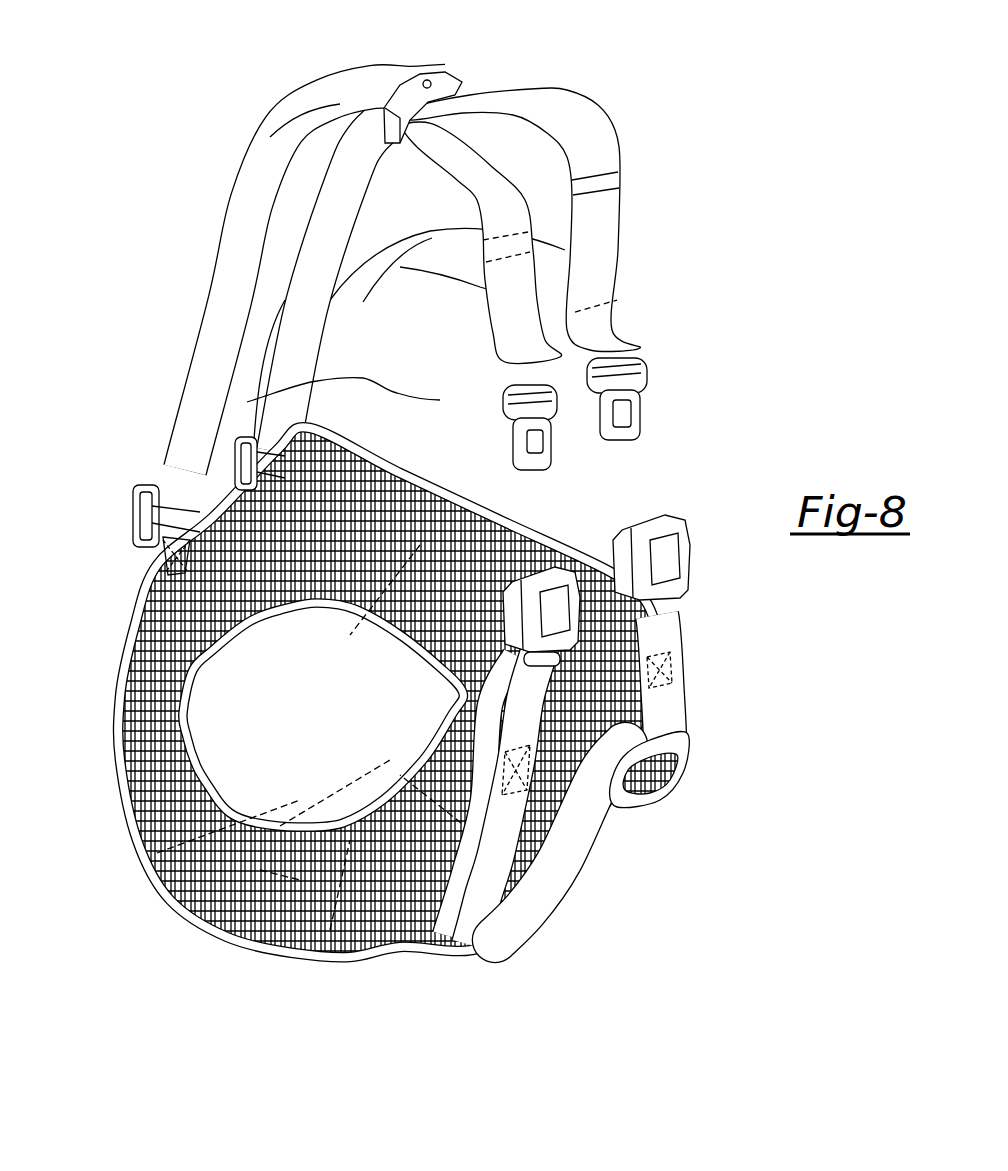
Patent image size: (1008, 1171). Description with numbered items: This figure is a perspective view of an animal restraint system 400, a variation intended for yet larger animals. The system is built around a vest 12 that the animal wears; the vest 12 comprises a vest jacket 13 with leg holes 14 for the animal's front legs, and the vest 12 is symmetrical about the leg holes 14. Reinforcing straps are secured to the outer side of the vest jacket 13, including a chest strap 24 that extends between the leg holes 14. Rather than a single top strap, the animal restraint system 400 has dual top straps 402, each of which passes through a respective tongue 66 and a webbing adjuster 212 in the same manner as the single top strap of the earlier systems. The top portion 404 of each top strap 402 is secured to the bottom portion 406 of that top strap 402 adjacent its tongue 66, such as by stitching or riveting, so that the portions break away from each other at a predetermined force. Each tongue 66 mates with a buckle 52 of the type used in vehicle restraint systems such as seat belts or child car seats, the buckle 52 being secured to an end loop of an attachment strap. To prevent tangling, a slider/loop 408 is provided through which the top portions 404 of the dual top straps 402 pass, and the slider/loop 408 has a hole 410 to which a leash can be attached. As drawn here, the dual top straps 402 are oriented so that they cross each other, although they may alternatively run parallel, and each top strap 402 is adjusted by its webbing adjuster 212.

The animal restraint system 400 is at (488, 253).
The dual top straps 402 is at (453, 238).
The top portion 404 is at (609, 241).
The bottom portion 406 is at (363, 336).
The slider/loop 408 is at (398, 79).
The hole 410 is at (452, 76).
The tongue 66 is at (592, 450).
The buckle 52 is at (582, 626).
The webbing adjuster 212 is at (135, 511).
The vest 12 is at (371, 718).
The vest jacket 13 is at (150, 776).
The leg holes 14 is at (208, 747).
The chest strap 24 is at (253, 937).